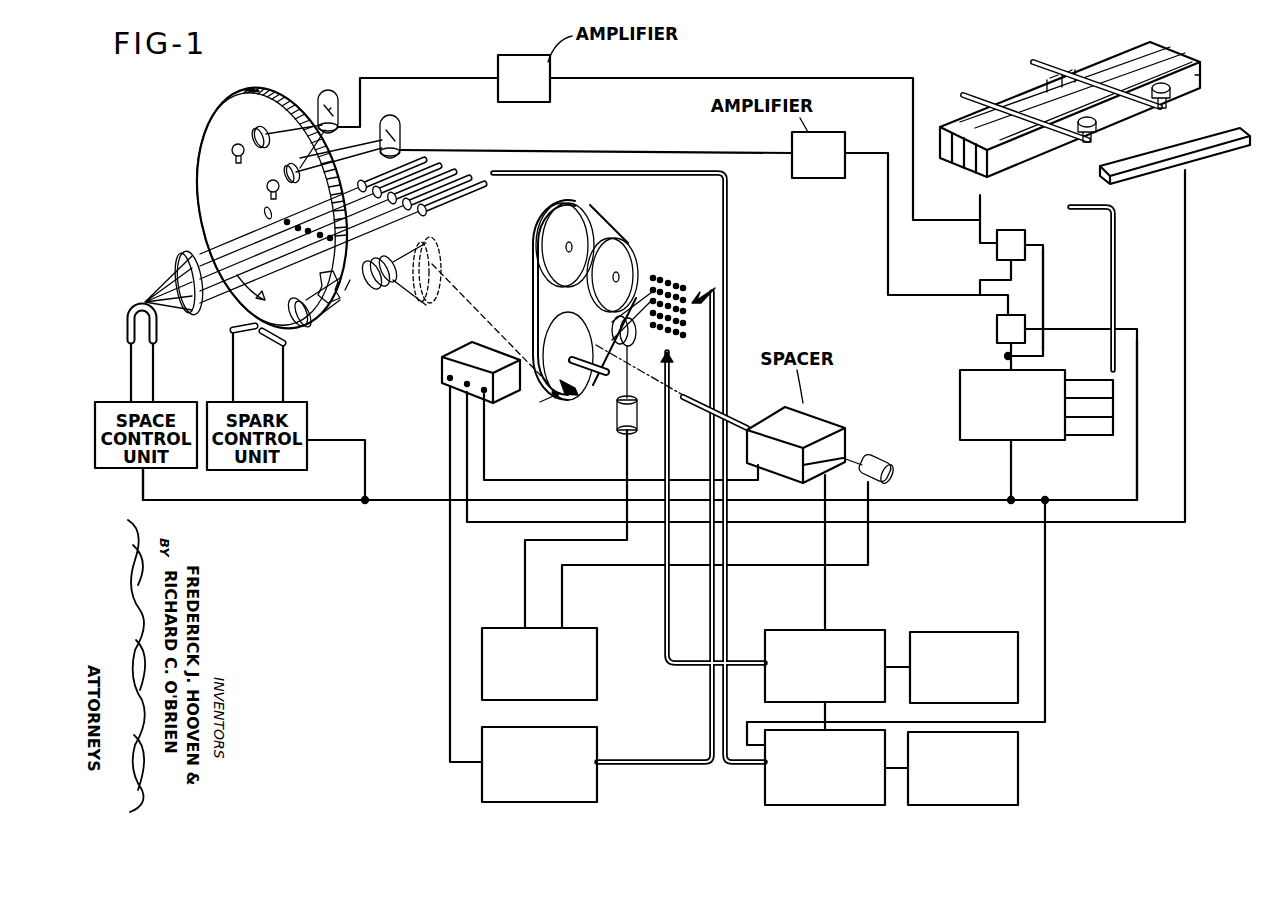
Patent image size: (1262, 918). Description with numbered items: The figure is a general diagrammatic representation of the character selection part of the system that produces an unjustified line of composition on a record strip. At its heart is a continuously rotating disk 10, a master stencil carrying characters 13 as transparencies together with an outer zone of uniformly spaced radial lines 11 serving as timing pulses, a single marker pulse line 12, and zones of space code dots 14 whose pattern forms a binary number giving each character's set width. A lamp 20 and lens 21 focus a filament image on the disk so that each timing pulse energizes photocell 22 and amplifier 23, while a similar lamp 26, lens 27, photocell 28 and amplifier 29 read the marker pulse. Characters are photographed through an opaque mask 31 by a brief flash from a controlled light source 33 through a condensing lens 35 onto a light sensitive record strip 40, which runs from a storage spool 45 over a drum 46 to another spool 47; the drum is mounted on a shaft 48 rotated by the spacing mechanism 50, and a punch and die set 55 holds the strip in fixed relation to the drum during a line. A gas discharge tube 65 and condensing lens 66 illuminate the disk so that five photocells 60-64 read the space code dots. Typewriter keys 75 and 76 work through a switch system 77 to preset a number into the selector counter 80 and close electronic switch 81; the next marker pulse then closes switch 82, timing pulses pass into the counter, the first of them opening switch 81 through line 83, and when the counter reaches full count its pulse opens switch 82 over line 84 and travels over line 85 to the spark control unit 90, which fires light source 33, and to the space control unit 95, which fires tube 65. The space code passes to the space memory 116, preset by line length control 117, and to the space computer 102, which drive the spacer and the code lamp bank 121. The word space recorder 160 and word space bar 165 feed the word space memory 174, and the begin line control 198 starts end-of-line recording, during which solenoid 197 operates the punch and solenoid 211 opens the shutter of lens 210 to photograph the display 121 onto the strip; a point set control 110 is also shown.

The rotating disk 10 is at (198, 178).
The radial lines (timing pulses) 11 is at (251, 90).
The marker pulse line 12 is at (250, 103).
The characters 13 is at (347, 293).
The space code dots 14 is at (338, 241).
The lamp 20 is at (268, 193).
The lens 21 is at (283, 172).
The photocell 22 is at (400, 122).
The amplifier 23 is at (838, 133).
The lamp 26 is at (232, 148).
The lens 27 is at (253, 135).
The photocell 28 is at (326, 92).
The amplifier 29 is at (512, 62).
The opaque mask 31 is at (335, 304).
The controlled light source 33 is at (252, 333).
The condensing lens 35 is at (300, 327).
The record strip 40 is at (535, 292).
The storage spool 45 is at (630, 248).
The drum 46 is at (441, 262).
The storage spool 47 is at (580, 225).
The shaft 48 is at (694, 412).
The spacing mechanism 50 is at (822, 420).
The punch and die set 55 is at (545, 405).
The photocells 60-64 is at (432, 207).
The gas discharge tube 65 is at (128, 305).
The condensing lens 66 is at (176, 262).
The typewriter key 75 is at (1080, 143).
The typewriter key 76 is at (1172, 88).
The switch system 77 is at (1015, 91).
The selector counter 80 is at (960, 385).
The electronic switch 81 is at (1028, 242).
The switch 82 is at (995, 332).
The line 83 is at (1046, 284).
The line 84 is at (1139, 373).
The line 85 is at (968, 500).
The spark control unit 90 is at (312, 422).
The space control unit 95 is at (118, 470).
The space computer 102 is at (765, 790).
The point set control 110 is at (1018, 760).
The space memory 116 is at (858, 632).
The line length control 117 is at (965, 634).
The code lamp bank (data display) 121 is at (668, 276).
The word space recorder 160 is at (440, 366).
The word space bar 165 is at (1140, 187).
The word space memory 174 is at (482, 790).
The solenoid 197 is at (880, 458).
The begin line control 198 is at (500, 632).
The lens 210 is at (634, 348).
The solenoid 211 is at (618, 428).